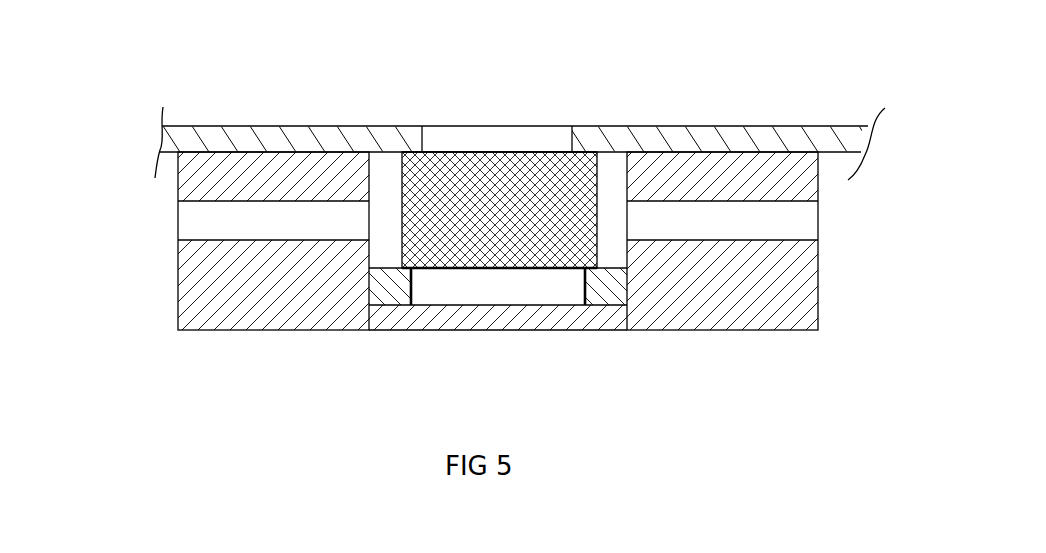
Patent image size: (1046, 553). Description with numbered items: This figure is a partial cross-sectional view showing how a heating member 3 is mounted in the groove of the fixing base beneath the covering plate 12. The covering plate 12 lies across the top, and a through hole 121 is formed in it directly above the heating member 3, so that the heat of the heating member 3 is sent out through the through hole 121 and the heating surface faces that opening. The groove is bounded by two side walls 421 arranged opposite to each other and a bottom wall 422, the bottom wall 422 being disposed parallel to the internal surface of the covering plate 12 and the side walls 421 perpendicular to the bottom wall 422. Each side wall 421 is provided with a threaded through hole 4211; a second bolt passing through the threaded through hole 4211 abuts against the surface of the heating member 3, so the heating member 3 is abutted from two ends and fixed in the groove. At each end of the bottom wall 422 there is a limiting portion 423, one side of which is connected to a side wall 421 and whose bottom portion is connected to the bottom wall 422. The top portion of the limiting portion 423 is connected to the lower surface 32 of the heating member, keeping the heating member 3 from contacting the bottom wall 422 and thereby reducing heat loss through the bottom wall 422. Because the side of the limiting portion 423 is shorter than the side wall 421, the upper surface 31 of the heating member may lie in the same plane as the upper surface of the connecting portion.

The covering plate 12 is at (363, 150).
The through hole 121 is at (475, 140).
The heating member 3 is at (505, 178).
The upper surface of heating member 31 is at (437, 152).
The lower surface of heating member 32 is at (467, 272).
The side wall 421 is at (643, 153).
The threaded through hole 4211 is at (253, 219).
The bottom wall 422 is at (510, 318).
The limiting portion 423 is at (390, 280).